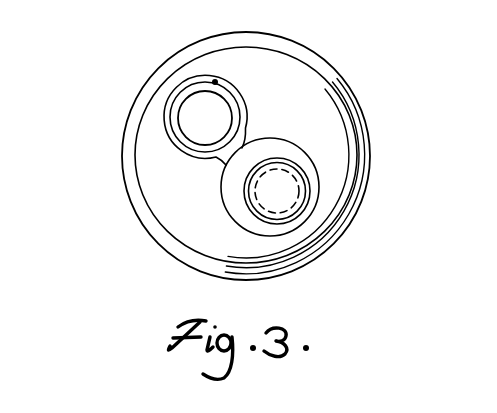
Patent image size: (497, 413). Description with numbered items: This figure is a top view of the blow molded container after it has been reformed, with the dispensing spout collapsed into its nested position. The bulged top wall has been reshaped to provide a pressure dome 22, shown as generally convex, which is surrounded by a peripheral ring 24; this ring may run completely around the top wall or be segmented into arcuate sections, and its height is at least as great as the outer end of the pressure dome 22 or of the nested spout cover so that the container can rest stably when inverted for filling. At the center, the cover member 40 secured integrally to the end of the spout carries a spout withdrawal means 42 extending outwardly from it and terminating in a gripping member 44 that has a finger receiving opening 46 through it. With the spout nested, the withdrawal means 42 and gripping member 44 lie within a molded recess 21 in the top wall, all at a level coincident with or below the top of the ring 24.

The molded recess 21 is at (218, 80).
The pressure dome 22 is at (318, 131).
The peripheral ring 24 is at (346, 93).
The cover member 40 is at (283, 188).
The spout withdrawal means 42 is at (236, 148).
The gripping member 44 is at (232, 103).
The finger receiving opening 46 is at (183, 118).